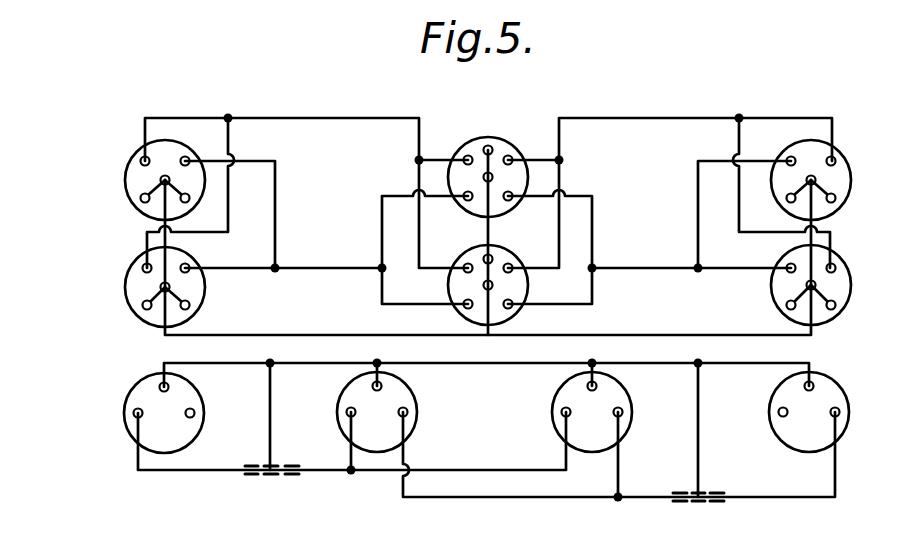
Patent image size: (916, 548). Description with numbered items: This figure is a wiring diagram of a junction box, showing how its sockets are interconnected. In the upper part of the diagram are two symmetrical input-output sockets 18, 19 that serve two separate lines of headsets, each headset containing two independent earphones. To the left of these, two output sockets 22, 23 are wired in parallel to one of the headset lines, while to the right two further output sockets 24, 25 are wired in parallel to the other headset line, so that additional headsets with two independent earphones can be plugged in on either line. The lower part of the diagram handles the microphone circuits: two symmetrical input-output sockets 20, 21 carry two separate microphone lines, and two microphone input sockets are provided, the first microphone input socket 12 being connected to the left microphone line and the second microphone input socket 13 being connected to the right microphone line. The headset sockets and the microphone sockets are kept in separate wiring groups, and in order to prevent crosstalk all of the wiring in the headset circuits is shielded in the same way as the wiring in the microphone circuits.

The microphone input socket 12 is at (126, 397).
The microphone input socket 13 is at (848, 420).
The input-output socket 18 is at (505, 146).
The input-output socket 19 is at (510, 256).
The input-output socket 20 is at (418, 412).
The input-output socket 21 is at (557, 435).
The output socket 22 is at (125, 186).
The output socket 23 is at (125, 293).
The output socket 24 is at (850, 189).
The output socket 25 is at (851, 289).